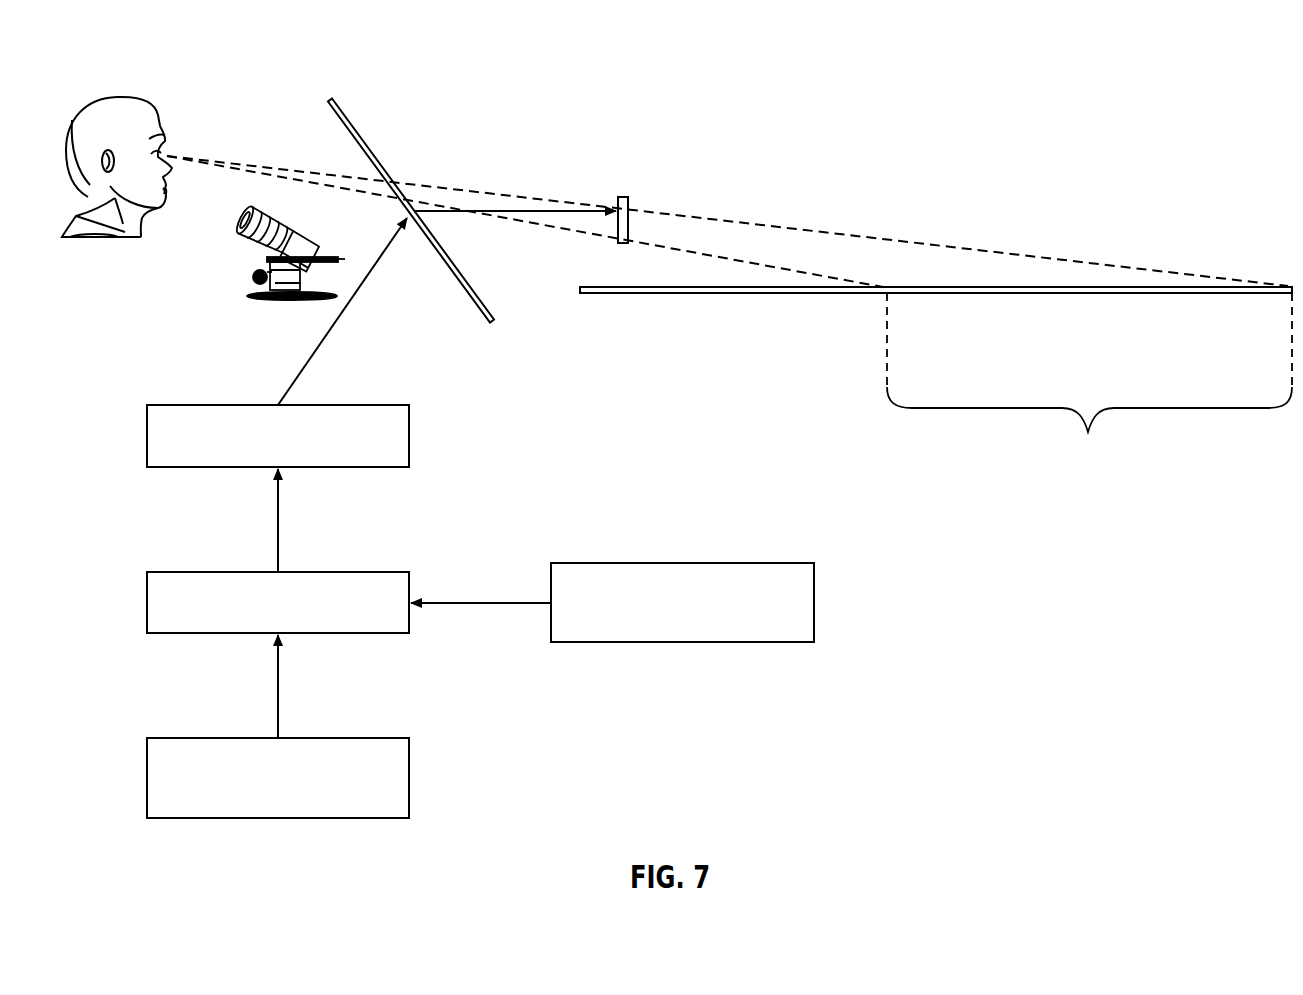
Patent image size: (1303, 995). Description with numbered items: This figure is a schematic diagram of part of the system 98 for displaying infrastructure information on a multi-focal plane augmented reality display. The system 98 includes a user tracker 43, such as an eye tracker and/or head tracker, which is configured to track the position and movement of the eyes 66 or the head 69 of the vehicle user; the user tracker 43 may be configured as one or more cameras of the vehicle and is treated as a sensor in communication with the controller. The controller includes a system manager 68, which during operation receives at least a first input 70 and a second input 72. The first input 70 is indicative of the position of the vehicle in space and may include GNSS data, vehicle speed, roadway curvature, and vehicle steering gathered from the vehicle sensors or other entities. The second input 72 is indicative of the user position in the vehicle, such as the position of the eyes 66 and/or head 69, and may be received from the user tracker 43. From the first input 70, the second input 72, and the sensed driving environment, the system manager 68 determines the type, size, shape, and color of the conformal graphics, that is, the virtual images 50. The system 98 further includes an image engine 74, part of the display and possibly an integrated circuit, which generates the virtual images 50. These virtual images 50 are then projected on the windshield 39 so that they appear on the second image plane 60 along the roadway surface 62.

The windshield 39 is at (340, 108).
The user tracker 43 is at (246, 297).
The virtual image 50 is at (623, 196).
The second image plane 60 is at (1089, 380).
The roadway surface 62 is at (792, 294).
The eyes 66 is at (163, 194).
The system manager 68 is at (410, 590).
The head 69 is at (118, 97).
The first input 70 is at (410, 777).
The second input 72 is at (815, 603).
The image engine 74 is at (410, 437).
The system 98 is at (1016, 96).